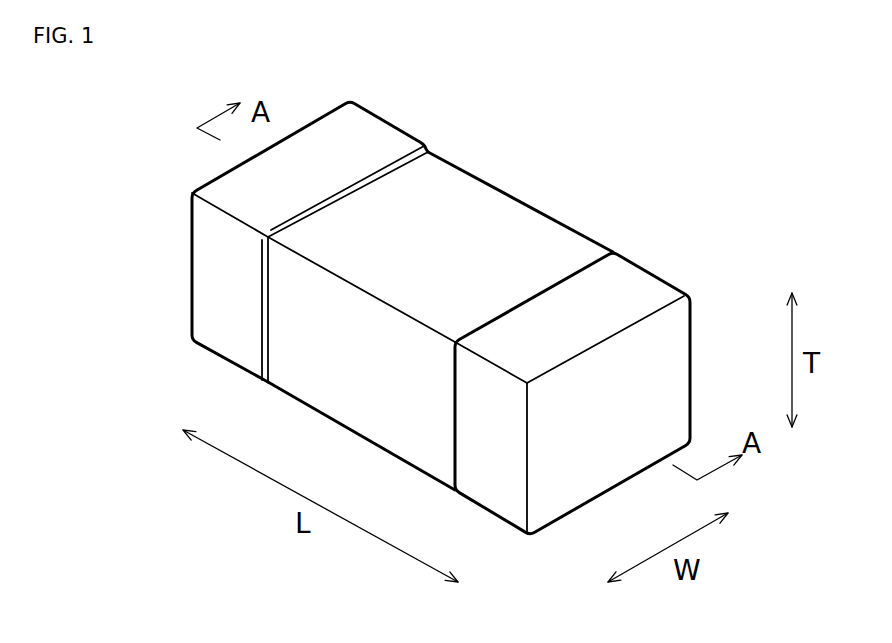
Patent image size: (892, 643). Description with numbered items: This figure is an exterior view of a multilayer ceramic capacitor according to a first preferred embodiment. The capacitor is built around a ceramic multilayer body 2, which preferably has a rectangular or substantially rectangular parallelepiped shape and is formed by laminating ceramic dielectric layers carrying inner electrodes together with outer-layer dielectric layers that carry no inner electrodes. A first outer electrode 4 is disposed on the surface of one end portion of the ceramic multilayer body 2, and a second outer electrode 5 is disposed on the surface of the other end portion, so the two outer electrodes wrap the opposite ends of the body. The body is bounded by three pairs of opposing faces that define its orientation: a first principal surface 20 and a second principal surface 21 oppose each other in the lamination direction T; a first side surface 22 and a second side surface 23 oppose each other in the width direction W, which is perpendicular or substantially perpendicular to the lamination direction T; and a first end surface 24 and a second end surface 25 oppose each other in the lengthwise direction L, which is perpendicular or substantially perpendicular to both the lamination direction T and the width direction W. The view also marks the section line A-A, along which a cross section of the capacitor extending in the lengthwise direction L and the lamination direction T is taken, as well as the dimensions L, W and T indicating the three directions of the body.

The ceramic multilayer body 2 is at (428, 319).
The first outer electrode 4 is at (610, 462).
The second outer electrode 5 is at (360, 133).
The first principal surface 20 is at (517, 228).
The second principal surface 21 is at (424, 445).
The first side surface 22 is at (343, 385).
The second side surface 23 is at (540, 247).
The first end surface 24 is at (647, 368).
The second end surface 25 is at (192, 237).